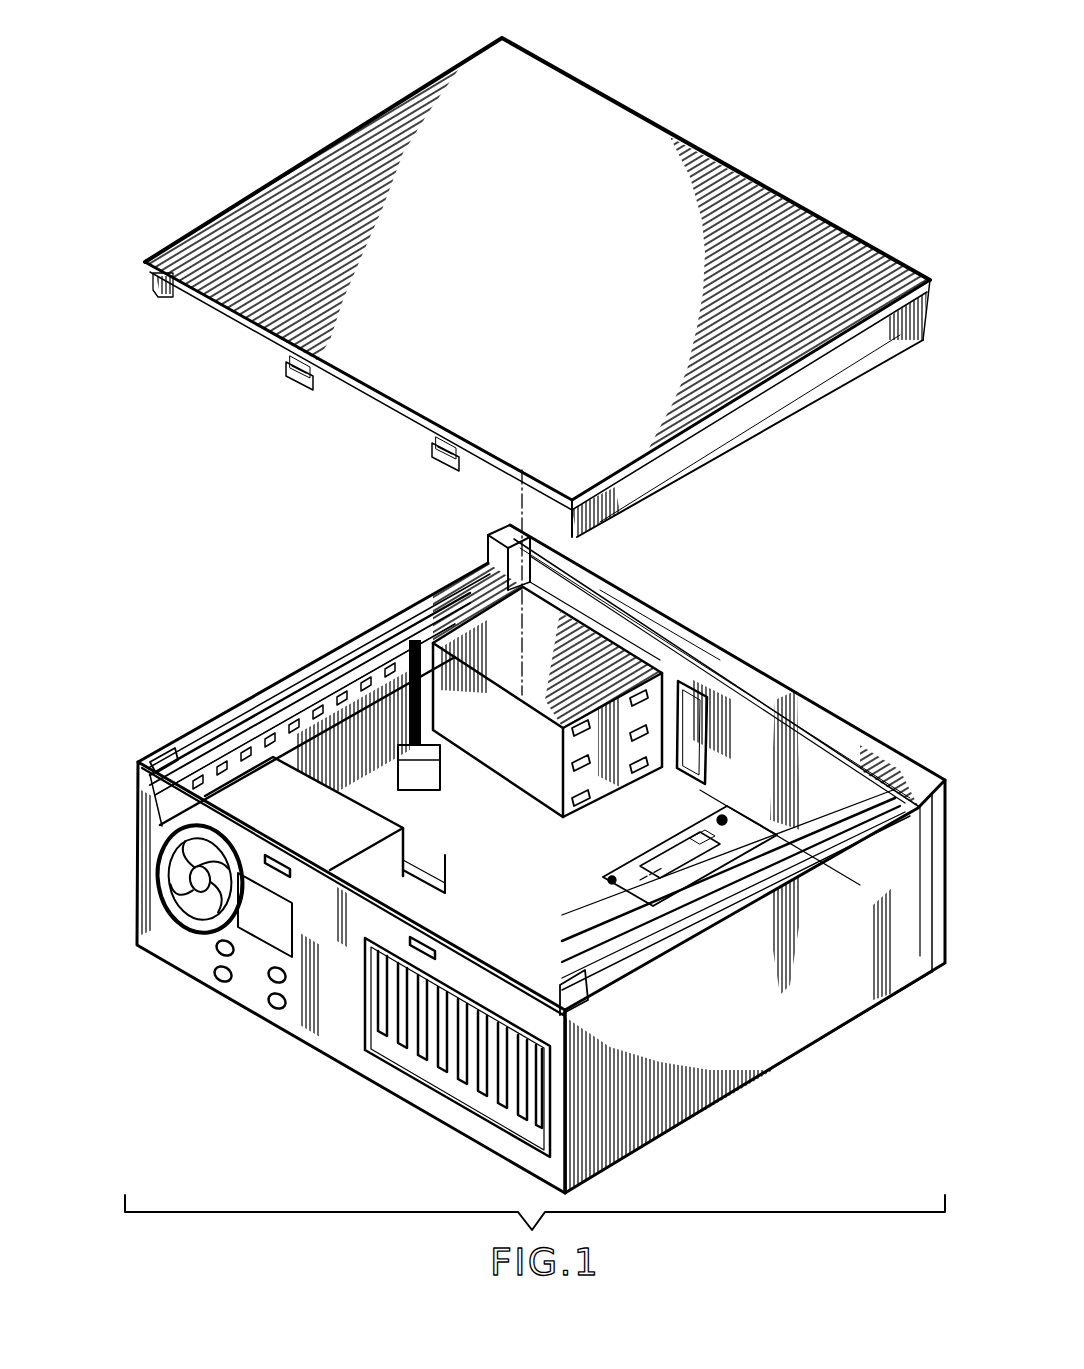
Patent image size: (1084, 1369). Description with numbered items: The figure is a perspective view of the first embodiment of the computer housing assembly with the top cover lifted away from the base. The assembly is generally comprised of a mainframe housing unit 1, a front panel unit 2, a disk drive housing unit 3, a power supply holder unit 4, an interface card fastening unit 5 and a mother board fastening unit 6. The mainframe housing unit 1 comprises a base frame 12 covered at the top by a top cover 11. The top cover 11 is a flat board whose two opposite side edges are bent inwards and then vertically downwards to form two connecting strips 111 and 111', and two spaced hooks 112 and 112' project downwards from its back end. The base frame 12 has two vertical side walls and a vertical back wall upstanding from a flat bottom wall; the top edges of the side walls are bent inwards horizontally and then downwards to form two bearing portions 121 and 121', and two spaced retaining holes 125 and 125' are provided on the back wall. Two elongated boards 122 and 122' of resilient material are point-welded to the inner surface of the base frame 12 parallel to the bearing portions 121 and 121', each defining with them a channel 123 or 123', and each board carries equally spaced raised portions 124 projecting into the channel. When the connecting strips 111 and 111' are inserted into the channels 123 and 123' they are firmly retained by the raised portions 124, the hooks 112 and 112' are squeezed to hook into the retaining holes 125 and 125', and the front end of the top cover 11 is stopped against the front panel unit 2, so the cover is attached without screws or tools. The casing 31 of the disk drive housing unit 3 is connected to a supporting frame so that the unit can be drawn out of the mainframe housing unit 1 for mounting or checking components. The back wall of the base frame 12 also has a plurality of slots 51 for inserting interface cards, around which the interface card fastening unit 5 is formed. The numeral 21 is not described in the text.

The mainframe housing unit 1 is at (541, 859).
The top cover 11 is at (745, 185).
The connecting strip 111 is at (169, 319).
The connecting strip 111' is at (750, 428).
The hook 112 is at (299, 401).
The hook 112' is at (446, 475).
The base frame 12 is at (305, 670).
The bearing portion 121 is at (152, 726).
The bearing portion 121' is at (615, 1000).
The elongated board 122 is at (310, 665).
The elongated board 122' is at (736, 870).
The channel 123 is at (305, 704).
The channel 123' is at (731, 868).
The raised portions 124 is at (223, 760).
The retaining hole 125 is at (284, 836).
The retaining hole 125' is at (461, 930).
The front panel unit 2 is at (715, 673).
The rear panel top edge 21 is at (636, 640).
The casing 31 is at (648, 660).
The disk drive housing unit 3 is at (547, 675).
The power supply holder unit 4 is at (337, 825).
The interface card fastening unit 5 is at (457, 1059).
The slots 51 is at (440, 1080).
The mother board fastening unit 6 is at (560, 905).